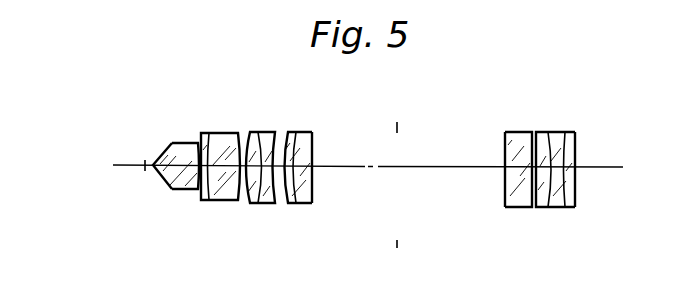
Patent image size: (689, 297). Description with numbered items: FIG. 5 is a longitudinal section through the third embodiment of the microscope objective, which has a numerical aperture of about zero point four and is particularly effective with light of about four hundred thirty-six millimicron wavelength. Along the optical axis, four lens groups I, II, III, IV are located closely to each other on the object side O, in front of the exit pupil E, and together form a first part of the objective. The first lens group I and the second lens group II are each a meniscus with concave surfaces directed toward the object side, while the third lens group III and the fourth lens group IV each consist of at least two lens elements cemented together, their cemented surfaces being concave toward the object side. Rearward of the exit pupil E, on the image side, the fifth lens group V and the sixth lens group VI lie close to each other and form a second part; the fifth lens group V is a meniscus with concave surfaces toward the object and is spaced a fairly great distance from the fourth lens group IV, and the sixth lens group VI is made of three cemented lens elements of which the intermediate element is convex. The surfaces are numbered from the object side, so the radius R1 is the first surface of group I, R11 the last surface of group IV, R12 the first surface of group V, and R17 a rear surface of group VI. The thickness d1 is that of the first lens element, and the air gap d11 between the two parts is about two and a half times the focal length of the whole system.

The first lens group I is at (179, 141).
The second lens group II is at (220, 146).
The third lens group III is at (260, 148).
The fourth lens group IV is at (298, 148).
The fifth lens group V is at (518, 153).
The sixth lens group VI is at (555, 153).
The object side O is at (146, 169).
The exit pupil E is at (400, 170).
The radius of curvature of the first surface R1 is at (156, 172).
The radius of curvature of the eleventh surface R11 is at (313, 186).
The radius of curvature of the twelfth surface R12 is at (505, 188).
The radius of curvature of the seventeenth surface R17 is at (575, 187).
The thickness of the first lens element d1 is at (177, 157).
The air gap between the fourth and fifth lens groups d11 is at (416, 155).